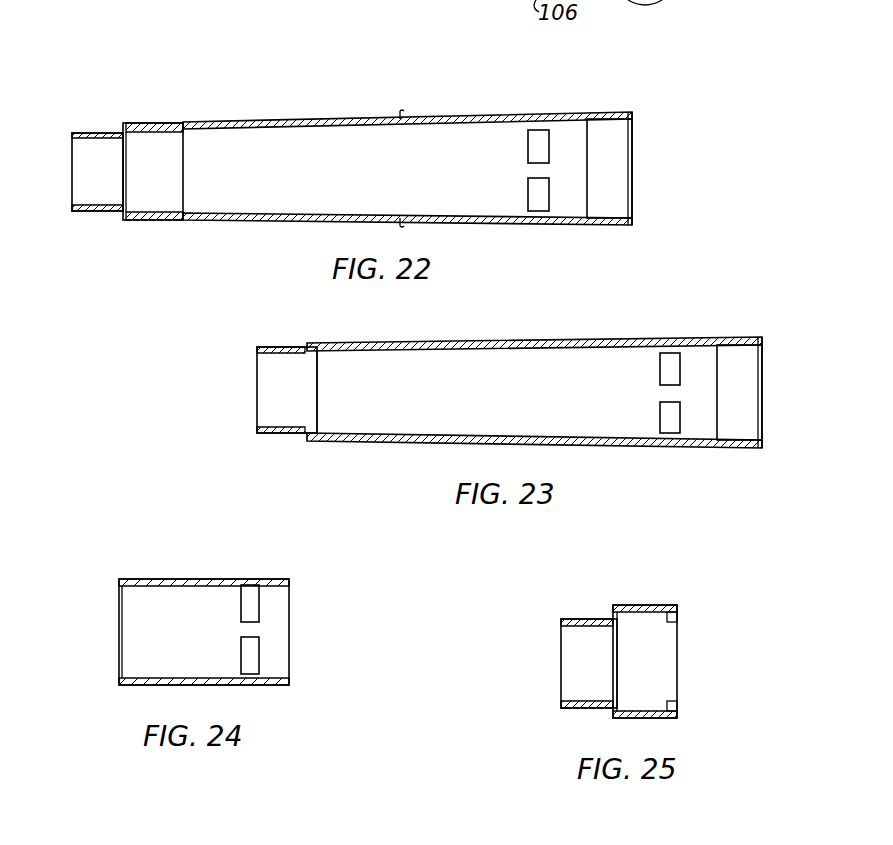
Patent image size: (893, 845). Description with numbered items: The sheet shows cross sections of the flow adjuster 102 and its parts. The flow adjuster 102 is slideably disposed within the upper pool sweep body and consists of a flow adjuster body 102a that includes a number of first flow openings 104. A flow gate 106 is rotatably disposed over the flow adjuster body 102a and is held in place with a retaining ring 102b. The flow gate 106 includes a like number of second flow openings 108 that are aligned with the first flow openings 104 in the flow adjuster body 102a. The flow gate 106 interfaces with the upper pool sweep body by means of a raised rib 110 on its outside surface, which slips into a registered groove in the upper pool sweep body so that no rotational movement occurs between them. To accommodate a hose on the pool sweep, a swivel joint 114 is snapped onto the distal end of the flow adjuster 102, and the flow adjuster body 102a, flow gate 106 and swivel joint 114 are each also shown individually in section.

In FIG. 22, the flow adjuster 102 is at (348, 166).
In FIG. 22, the flow adjuster body 102a is at (240, 220).
In FIG. 23, the flow adjuster body 102a is at (470, 343).
In FIG. 22, the retaining ring 102b is at (402, 113).
In FIG. 22, the first flow openings 104 is at (549, 145).
In FIG. 23, the first flow openings 104 is at (672, 353).
In FIG. 22, the flow gate 106 is at (484, 112).
In FIG. 24, the flow gate 106 is at (210, 579).
In FIG. 24, the second flow openings 108 is at (259, 605).
In FIG. 24, the raised rib 110 is at (135, 579).
In FIG. 22, the swivel joint 114 is at (99, 133).
In FIG. 25, the swivel joint 114 is at (677, 630).